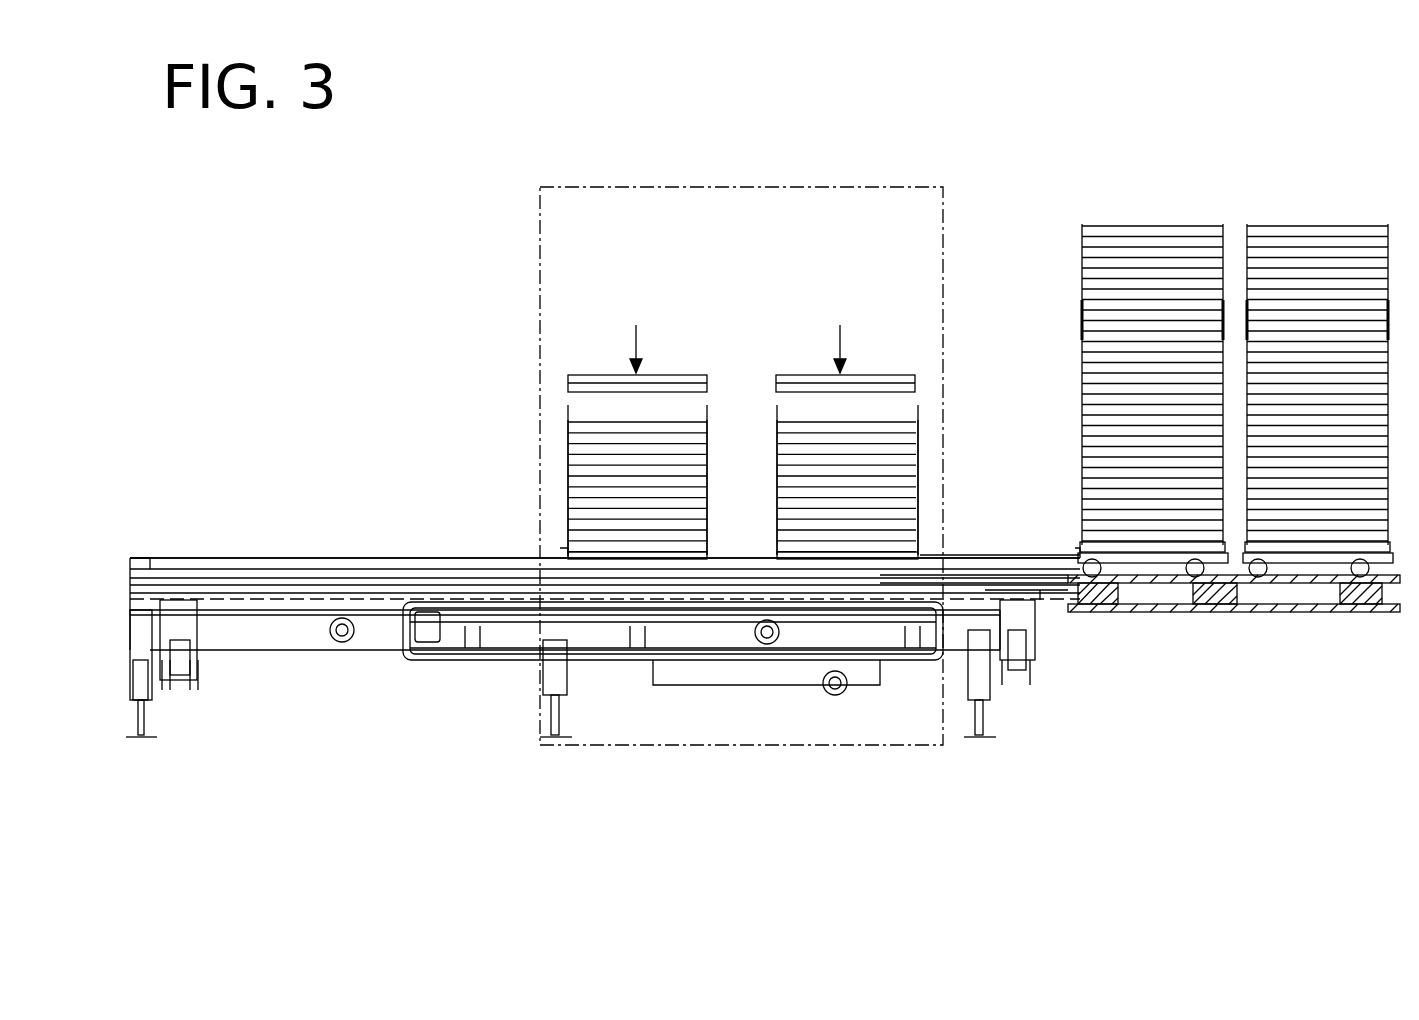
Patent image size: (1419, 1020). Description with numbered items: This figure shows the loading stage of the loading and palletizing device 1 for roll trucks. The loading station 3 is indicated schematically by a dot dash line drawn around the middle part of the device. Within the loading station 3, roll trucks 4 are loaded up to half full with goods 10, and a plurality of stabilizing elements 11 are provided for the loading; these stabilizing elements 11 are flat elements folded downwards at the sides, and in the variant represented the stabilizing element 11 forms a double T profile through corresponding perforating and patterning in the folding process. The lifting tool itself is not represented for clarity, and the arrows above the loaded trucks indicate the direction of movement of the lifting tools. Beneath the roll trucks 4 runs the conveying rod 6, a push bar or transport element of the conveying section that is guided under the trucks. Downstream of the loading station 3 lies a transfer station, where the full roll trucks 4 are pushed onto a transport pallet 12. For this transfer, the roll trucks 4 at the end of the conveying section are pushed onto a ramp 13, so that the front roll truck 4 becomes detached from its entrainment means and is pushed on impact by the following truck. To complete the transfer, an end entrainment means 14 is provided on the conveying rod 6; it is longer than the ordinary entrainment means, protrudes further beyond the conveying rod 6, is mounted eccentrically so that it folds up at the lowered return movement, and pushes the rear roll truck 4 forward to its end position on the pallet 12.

The loading and palletizing device 1 is at (285, 708).
The loading station 3 is at (568, 202).
The roll truck 4 is at (920, 555).
The conveying rod 6 is at (380, 565).
The goods 10 is at (622, 378).
The stabilizing element 11 is at (567, 410).
The transport pallet 12 is at (1100, 607).
The ramp 13 is at (1040, 592).
The end entrainment means 14 is at (560, 550).